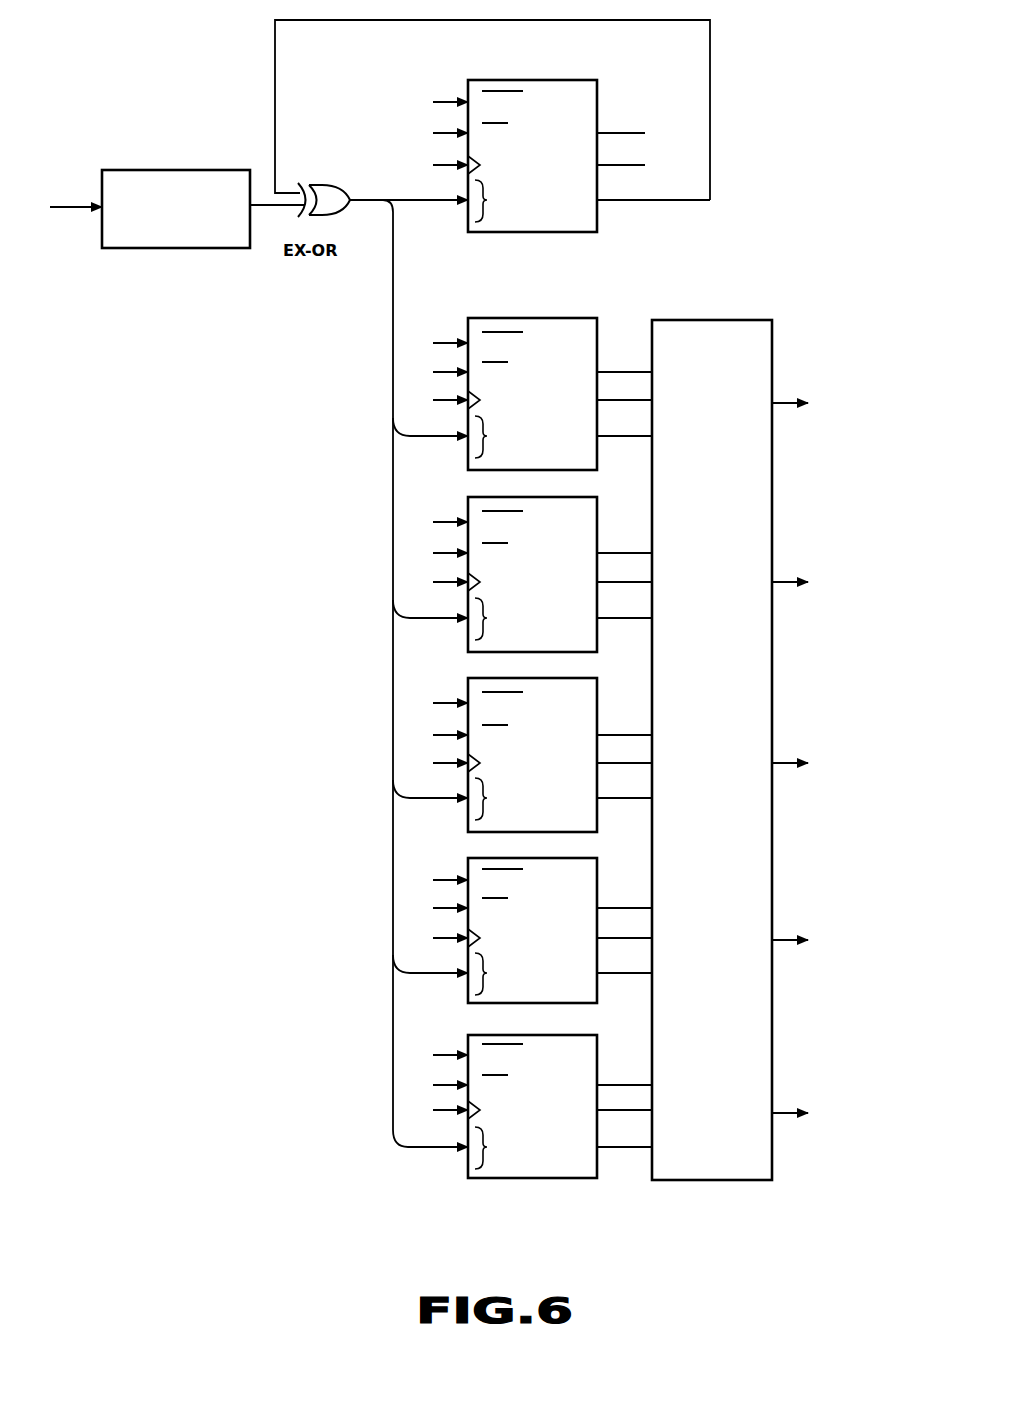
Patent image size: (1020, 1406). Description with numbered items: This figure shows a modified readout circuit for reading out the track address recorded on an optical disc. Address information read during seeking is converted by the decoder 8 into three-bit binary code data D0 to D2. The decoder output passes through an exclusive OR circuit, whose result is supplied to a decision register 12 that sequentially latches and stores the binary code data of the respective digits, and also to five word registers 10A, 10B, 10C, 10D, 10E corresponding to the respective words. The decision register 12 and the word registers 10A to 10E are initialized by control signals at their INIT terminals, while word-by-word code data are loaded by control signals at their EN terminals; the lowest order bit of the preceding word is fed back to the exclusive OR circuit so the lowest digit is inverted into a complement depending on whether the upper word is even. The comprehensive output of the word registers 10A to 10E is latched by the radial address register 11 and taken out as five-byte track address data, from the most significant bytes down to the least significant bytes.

The decoder 8 is at (183, 250).
The decision register 12 is at (576, 78).
The word register 10A is at (572, 298).
The word register 10B is at (597, 511).
The word register 10C is at (597, 692).
The word register 10D is at (597, 871).
The word register 10E is at (597, 1049).
The radial address register 11 is at (737, 320).